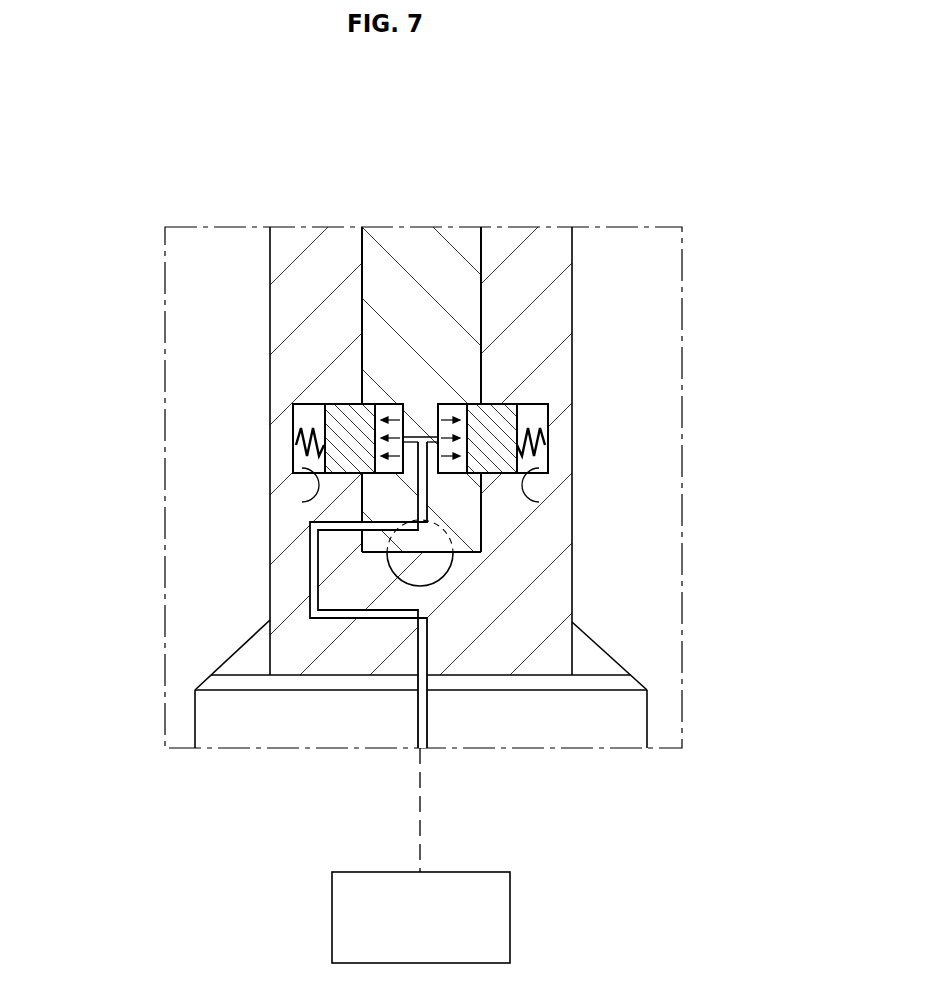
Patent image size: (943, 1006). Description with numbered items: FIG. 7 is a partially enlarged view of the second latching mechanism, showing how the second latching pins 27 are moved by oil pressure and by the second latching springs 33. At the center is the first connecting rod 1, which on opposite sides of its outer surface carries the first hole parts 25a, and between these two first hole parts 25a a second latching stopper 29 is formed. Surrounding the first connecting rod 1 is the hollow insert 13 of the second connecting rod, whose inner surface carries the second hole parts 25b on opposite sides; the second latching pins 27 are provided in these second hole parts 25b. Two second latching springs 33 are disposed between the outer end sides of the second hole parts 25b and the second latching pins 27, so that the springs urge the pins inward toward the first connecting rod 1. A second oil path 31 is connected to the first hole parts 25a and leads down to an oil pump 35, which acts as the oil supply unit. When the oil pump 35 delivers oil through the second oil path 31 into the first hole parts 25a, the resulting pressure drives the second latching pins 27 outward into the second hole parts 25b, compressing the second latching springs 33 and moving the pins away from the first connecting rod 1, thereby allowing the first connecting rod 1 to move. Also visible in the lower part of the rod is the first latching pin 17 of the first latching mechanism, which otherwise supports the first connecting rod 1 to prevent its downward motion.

The first connecting rod 1 is at (407, 305).
The hollow insert 13 is at (541, 327).
The first latching pin 17 is at (437, 567).
The first hole part 25a is at (392, 410).
The second hole part 25b is at (302, 502).
The second latching pin 27 is at (337, 420).
The second latching stopper 29 is at (423, 410).
The second oil path 31 is at (420, 718).
The second latching spring 33 is at (293, 440).
The oil pump 35 is at (510, 918).